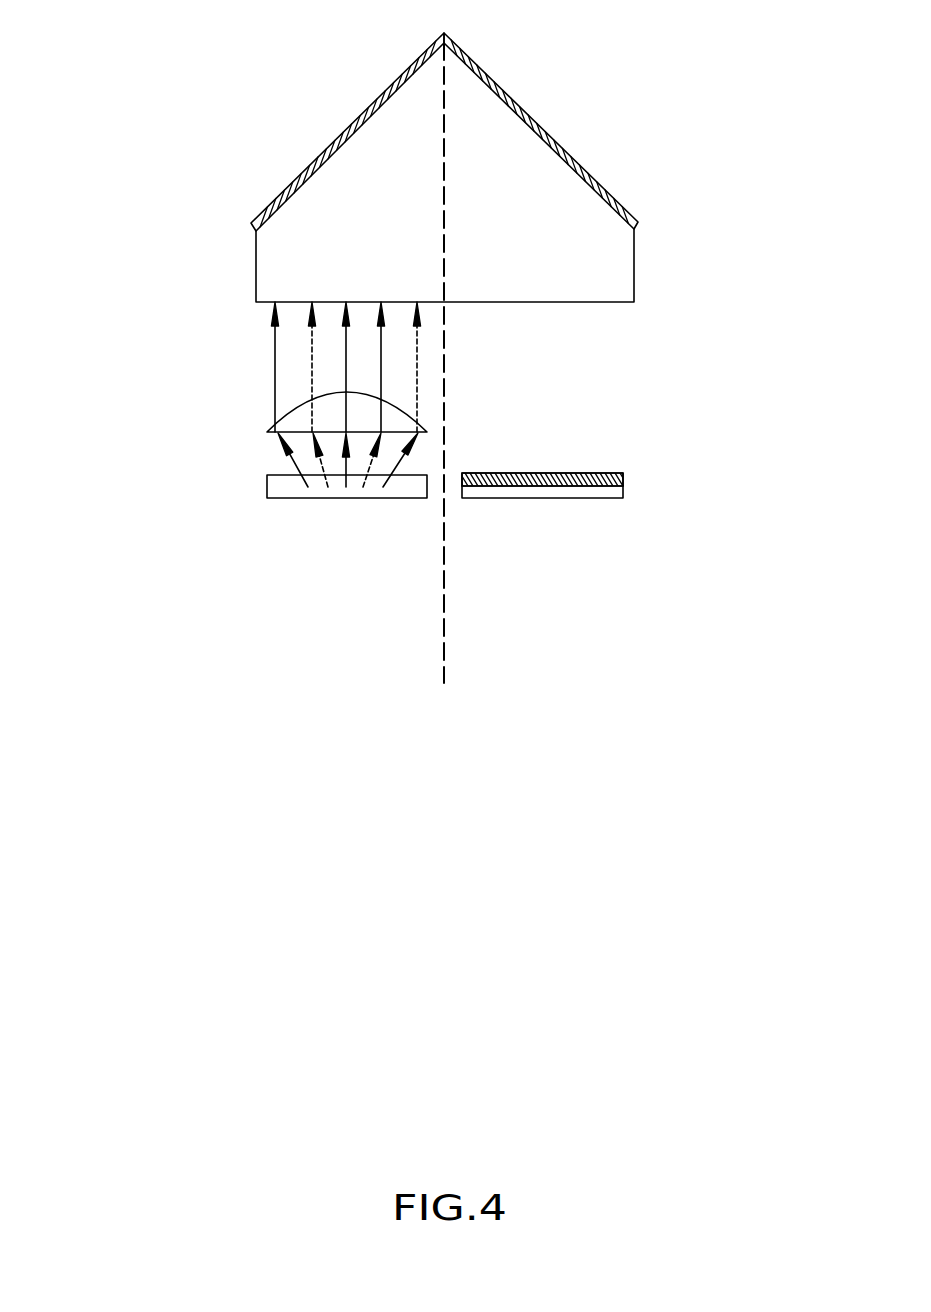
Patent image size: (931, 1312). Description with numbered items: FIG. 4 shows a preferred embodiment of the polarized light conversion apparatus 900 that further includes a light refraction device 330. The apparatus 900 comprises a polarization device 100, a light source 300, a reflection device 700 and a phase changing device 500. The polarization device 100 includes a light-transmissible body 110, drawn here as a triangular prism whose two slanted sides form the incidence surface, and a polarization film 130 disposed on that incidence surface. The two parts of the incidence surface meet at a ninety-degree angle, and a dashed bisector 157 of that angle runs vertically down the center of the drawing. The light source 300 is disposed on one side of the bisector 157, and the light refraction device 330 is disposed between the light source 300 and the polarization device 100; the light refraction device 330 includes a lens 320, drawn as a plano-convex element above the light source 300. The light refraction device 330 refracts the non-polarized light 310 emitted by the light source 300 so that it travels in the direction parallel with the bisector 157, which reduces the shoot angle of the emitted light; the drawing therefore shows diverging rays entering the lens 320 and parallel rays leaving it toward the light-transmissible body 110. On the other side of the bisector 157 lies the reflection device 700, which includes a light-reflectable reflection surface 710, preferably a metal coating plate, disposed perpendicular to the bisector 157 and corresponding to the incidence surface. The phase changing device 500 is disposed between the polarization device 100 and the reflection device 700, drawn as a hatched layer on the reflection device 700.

The polarization device 100 is at (335, 167).
The light-transmissible body 110 is at (283, 262).
The polarization film 130 is at (303, 167).
The bisector 157 is at (444, 338).
The light source 300 is at (277, 490).
The non-polarized light 310 is at (275, 356).
The lens 320 is at (275, 431).
The light refraction device 330 is at (297, 463).
The phase changing device 500 is at (588, 473).
The reflection device 700 is at (558, 487).
The reflection surface 710 is at (593, 487).
The polarized light conversion apparatus 900 is at (446, 349).